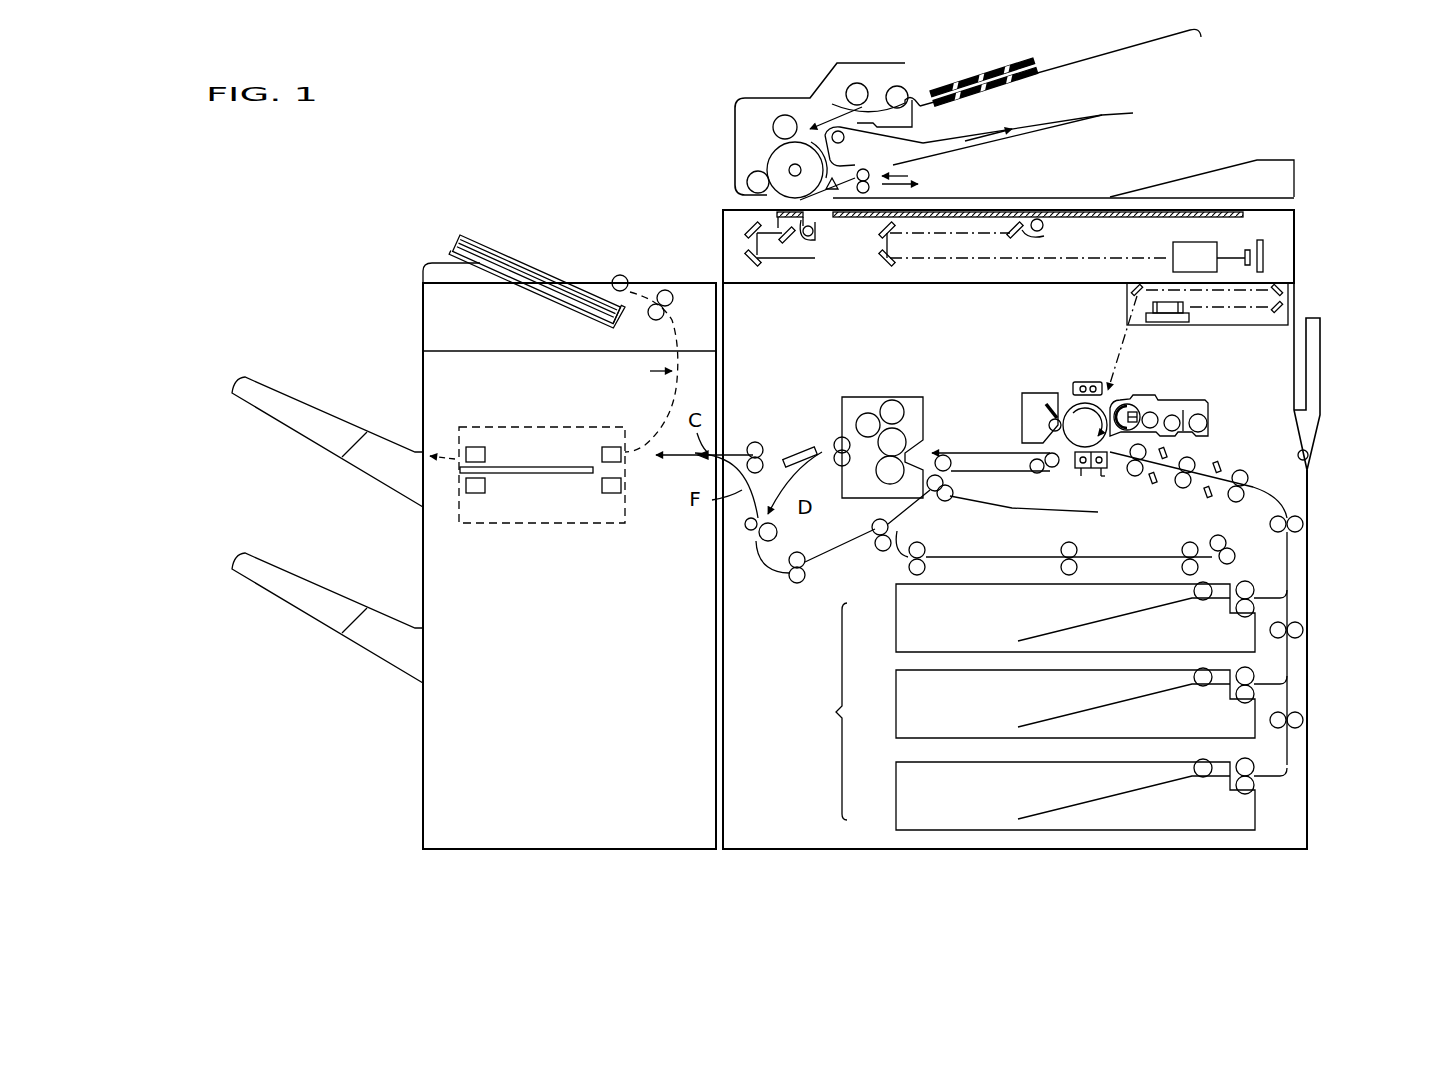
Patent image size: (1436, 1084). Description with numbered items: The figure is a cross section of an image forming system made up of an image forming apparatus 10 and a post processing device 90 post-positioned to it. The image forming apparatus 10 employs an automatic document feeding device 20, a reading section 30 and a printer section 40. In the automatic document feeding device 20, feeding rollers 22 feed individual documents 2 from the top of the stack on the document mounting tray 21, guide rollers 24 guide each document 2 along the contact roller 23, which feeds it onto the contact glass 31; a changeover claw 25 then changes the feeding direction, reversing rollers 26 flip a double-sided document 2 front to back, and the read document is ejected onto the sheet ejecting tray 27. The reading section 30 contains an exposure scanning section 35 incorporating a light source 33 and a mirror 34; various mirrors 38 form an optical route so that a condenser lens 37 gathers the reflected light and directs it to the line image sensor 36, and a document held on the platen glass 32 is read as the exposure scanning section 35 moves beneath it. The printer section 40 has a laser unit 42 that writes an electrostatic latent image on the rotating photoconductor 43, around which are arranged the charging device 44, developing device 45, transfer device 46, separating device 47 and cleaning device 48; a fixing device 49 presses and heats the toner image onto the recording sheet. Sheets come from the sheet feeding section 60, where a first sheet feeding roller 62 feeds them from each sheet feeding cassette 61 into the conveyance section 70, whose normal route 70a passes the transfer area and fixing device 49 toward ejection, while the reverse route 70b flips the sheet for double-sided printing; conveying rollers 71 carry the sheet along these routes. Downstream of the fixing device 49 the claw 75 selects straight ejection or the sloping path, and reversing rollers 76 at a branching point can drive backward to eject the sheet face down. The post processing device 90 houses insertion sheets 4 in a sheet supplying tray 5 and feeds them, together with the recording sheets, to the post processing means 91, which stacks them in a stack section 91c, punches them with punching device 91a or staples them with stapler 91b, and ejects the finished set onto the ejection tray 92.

The document 2 is at (1030, 56).
The insertion sheet 4 is at (488, 241).
The sheet supplying tray 5 is at (457, 240).
The image forming apparatus 10 is at (1238, 75).
The automatic document feeding device 20 is at (934, 66).
The document mounting tray 21 is at (1112, 50).
The feeding rollers 22 is at (897, 86).
The contact roller 23 is at (772, 152).
The guide rollers 24 is at (785, 115).
The changeover claw 25 is at (834, 176).
The reversing rollers 26 is at (862, 169).
The sheet ejecting tray 27 is at (1118, 112).
The reading section 30 is at (1297, 248).
The contact glass 31 is at (770, 213).
The platen glass 32 is at (1080, 210).
The light source 33 is at (1032, 219).
The mirror 34 is at (1013, 238).
The exposure scanning section 35 is at (1045, 231).
The line image sensor 36 is at (1260, 240).
The condenser lens 37 is at (1192, 242).
The mirrors 38 is at (888, 264).
The printer section 40 is at (1305, 513).
The laser unit 42 is at (1258, 328).
The photoconductor 43 is at (1070, 404).
The charging device 44 is at (1090, 382).
The developing device 45 is at (1152, 390).
The transfer device 46 is at (1102, 477).
The separating device 47 is at (1083, 471).
The cleaning device 48 is at (1022, 418).
The fixing device 49 is at (877, 397).
The sheet feeding section 60 is at (1048, 705).
The sheet feeding cassette 61 is at (894, 619).
The first sheet feeding roller 62 is at (1194, 593).
The conveyance section 70 is at (1293, 499).
The normal route 70a is at (962, 447).
The reverse route 70b is at (892, 558).
The conveying rollers 71 is at (1305, 528).
The claw 75 is at (800, 448).
The reversing rollers 76 is at (745, 523).
The post processing device 90 is at (423, 322).
The post processing means 91 is at (532, 485).
The punching device 91a is at (611, 447).
The stapler 91b is at (477, 447).
The stack section 91c is at (532, 476).
The ejection tray 92 is at (352, 465).